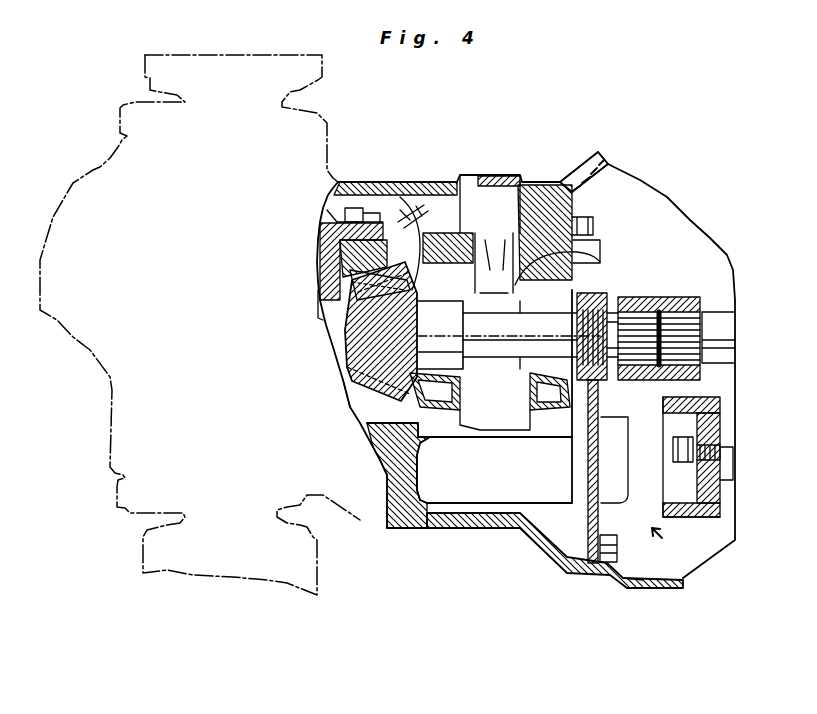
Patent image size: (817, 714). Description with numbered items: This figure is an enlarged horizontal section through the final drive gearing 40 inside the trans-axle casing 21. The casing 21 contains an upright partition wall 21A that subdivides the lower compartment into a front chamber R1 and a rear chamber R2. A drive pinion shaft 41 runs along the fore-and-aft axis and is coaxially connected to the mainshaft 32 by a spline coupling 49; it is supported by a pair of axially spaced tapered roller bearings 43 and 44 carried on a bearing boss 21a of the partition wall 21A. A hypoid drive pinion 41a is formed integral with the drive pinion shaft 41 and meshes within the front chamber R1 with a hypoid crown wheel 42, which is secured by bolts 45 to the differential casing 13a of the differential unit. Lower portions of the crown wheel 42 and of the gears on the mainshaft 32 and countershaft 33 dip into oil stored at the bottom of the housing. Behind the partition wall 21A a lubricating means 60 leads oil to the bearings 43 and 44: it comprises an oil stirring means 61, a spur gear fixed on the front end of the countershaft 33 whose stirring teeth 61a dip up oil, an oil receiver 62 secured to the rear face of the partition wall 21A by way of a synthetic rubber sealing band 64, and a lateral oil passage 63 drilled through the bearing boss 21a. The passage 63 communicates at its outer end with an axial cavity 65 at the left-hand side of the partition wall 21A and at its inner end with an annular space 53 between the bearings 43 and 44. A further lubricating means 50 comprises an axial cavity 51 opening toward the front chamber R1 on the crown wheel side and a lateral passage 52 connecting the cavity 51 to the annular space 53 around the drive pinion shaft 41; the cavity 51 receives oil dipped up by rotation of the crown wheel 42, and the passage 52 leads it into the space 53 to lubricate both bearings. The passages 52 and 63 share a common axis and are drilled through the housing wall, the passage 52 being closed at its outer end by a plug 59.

The differential casing 13a is at (318, 240).
The trans-axle casing 21 is at (427, 520).
The upright partition wall 21A is at (423, 492).
The bearing boss 21a is at (560, 215).
The mainshaft 32 is at (728, 327).
The countershaft 33 is at (732, 467).
The final drive gearing 40 is at (318, 316).
The drive pinion shaft 41 is at (600, 300).
The hypoid drive pinion 41a is at (353, 377).
The hypoid crown wheel 42 is at (320, 266).
The tapered roller bearing 43 is at (442, 430).
The tapered roller bearing 44 is at (535, 430).
The bolts 45 is at (350, 208).
The spline coupling 49 is at (667, 300).
The lubricating means 50 is at (463, 210).
The axial cavity 51 is at (455, 232).
The lateral passage 52 is at (500, 222).
The annular space 53 is at (577, 253).
The plug 59 is at (500, 173).
The lubricating means 60 is at (668, 547).
The oil stirring means 61 is at (720, 502).
The stirring teeth 61a is at (697, 518).
The oil receiver 62 is at (600, 407).
The lateral oil passage 63 is at (480, 430).
The sealing band 64 is at (567, 577).
The axial cavity 65 is at (547, 495).
The front chamber R1 is at (358, 405).
The rear chamber R2 is at (643, 557).